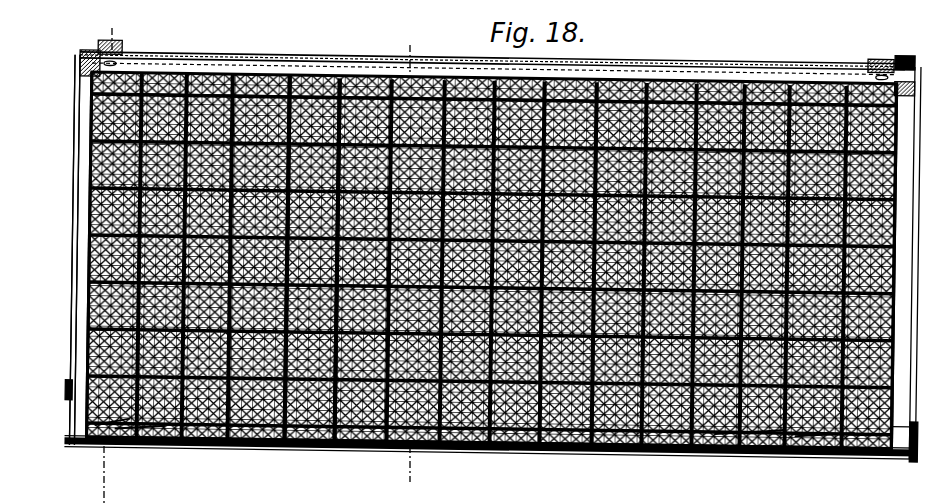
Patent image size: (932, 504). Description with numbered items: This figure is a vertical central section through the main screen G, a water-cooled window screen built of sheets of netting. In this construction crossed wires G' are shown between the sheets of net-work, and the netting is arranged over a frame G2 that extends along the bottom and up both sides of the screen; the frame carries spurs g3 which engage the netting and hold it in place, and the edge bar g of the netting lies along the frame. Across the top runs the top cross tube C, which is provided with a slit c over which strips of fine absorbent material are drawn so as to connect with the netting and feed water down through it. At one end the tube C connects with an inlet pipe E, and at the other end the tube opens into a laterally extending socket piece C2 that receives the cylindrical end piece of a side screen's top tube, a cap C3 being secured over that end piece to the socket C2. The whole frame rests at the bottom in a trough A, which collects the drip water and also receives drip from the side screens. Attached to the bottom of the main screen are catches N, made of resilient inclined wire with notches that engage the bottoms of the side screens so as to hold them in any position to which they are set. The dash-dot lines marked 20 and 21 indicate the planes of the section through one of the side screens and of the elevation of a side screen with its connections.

The main screen G is at (492, 276).
The crossed wires G' is at (329, 253).
The frame G2 is at (54, 250).
The grating edge bar g is at (898, 318).
The spurs g3 is at (92, 305).
The trough A is at (855, 456).
The top cross tube C is at (492, 54).
The slit c is at (673, 64).
The socket C2 is at (82, 58).
The cap C3 is at (98, 41).
The inlet pipe E is at (892, 66).
The catches N is at (150, 445).
The section line 20- 20 is at (135, 16).
The section line 21- 21 is at (439, 27).